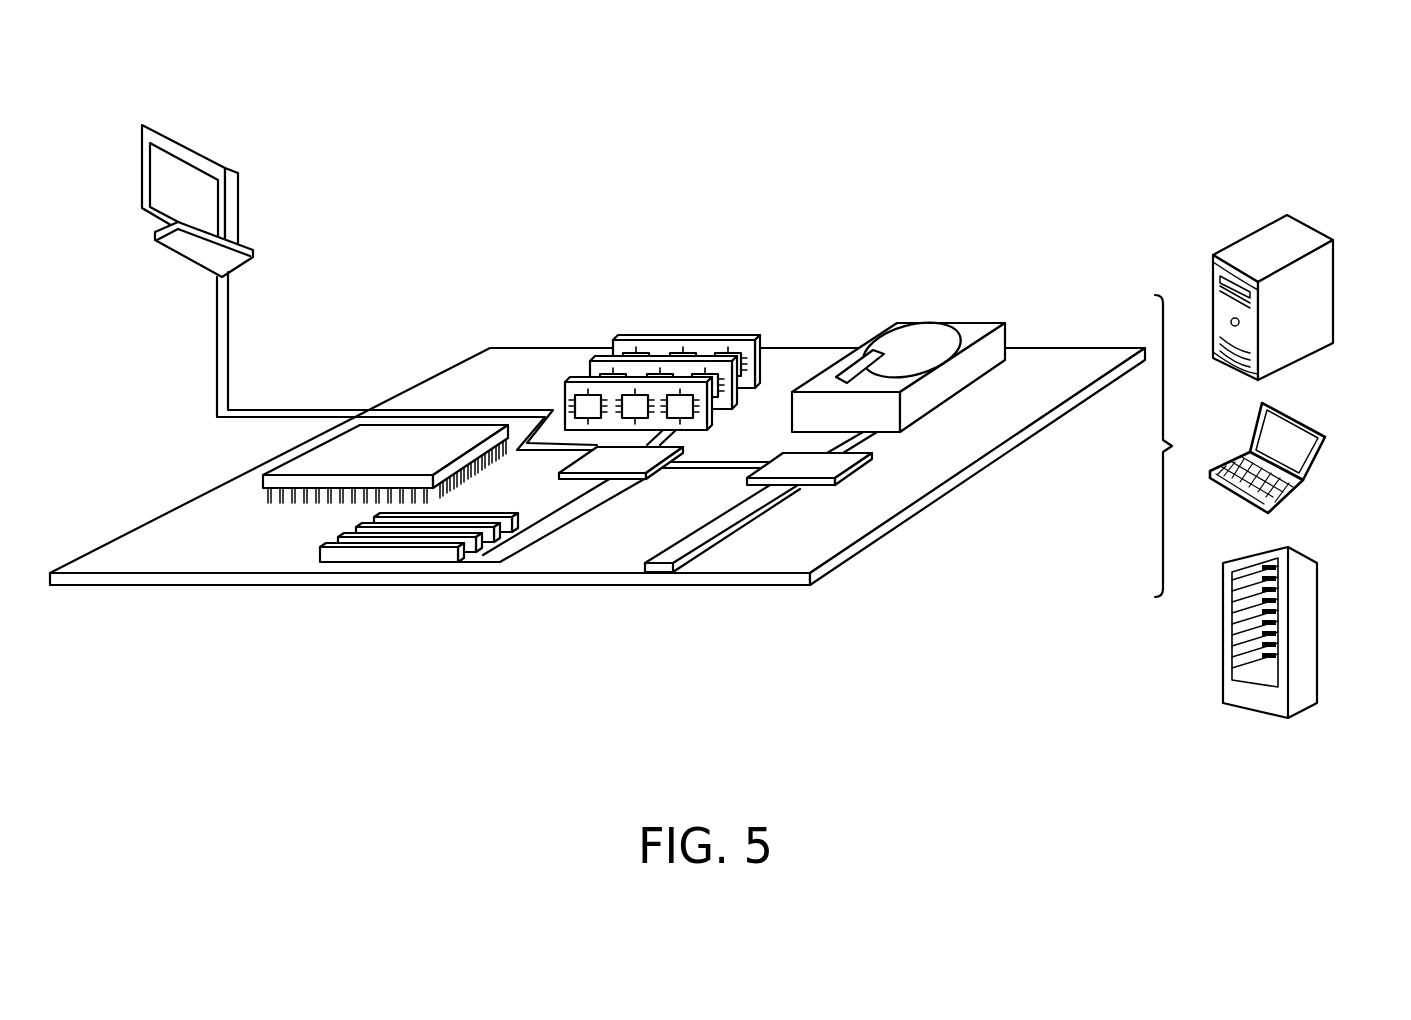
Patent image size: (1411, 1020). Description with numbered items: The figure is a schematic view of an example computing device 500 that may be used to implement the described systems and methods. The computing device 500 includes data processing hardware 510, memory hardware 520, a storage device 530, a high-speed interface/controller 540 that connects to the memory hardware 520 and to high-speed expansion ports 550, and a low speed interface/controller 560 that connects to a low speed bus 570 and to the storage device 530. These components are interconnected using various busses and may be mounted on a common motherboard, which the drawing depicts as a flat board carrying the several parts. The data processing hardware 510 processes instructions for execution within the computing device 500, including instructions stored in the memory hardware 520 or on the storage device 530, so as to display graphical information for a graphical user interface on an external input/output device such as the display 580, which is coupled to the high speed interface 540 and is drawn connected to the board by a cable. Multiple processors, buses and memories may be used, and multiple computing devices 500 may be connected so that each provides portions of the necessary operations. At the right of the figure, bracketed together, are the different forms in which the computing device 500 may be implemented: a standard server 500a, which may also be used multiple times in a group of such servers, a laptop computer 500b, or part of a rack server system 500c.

The computing device 500 is at (968, 100).
The standard server 500a is at (1242, 233).
The laptop computer 500b is at (1305, 422).
The rack server system 500c is at (1310, 608).
The data processing hardware 510 is at (262, 480).
The memory hardware 520 is at (678, 338).
The storage device 530 is at (950, 322).
The high-speed interface/controller 540 is at (625, 480).
The high-speed expansion ports 550 is at (320, 548).
The low speed interface/controller 560 is at (796, 458).
The low speed bus 570 is at (675, 574).
The display 580 is at (142, 178).